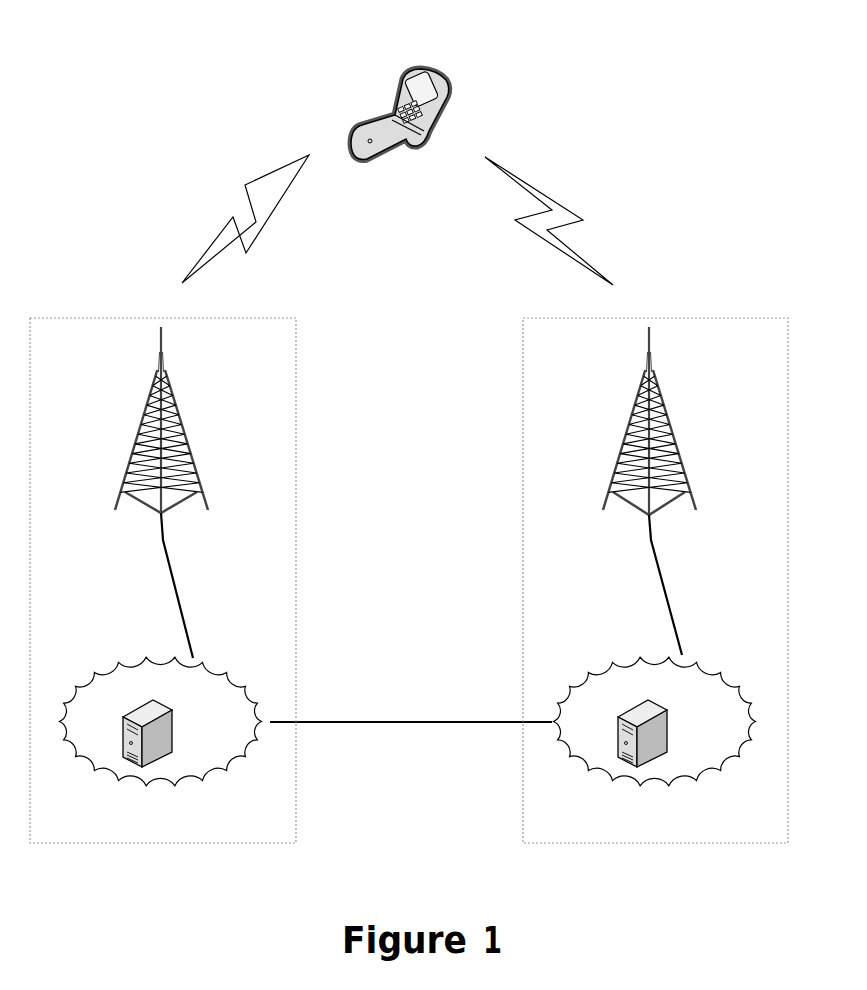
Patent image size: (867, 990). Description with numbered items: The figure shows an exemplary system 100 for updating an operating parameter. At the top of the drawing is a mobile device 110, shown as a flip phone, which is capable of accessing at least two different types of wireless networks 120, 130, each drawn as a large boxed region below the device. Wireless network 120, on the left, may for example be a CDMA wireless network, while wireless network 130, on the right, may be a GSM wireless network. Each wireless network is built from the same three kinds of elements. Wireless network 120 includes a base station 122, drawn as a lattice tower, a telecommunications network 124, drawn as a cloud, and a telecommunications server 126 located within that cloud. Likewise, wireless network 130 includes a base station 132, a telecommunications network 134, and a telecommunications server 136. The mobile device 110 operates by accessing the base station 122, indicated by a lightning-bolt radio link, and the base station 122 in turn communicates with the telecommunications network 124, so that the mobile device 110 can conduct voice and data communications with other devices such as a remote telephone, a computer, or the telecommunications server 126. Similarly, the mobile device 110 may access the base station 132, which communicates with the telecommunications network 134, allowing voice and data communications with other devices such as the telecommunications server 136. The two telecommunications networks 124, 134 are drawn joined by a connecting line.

The system 100 is at (110, 62).
The mobile device 110 is at (400, 134).
The wireless network 120 is at (105, 318).
The base station 122 is at (197, 472).
The telecommunications network 124 is at (122, 655).
The telecommunications server 126 is at (175, 733).
The wireless network 130 is at (737, 318).
The base station 132 is at (680, 473).
The telecommunications network 134 is at (617, 655).
The telecommunications server 136 is at (670, 737).